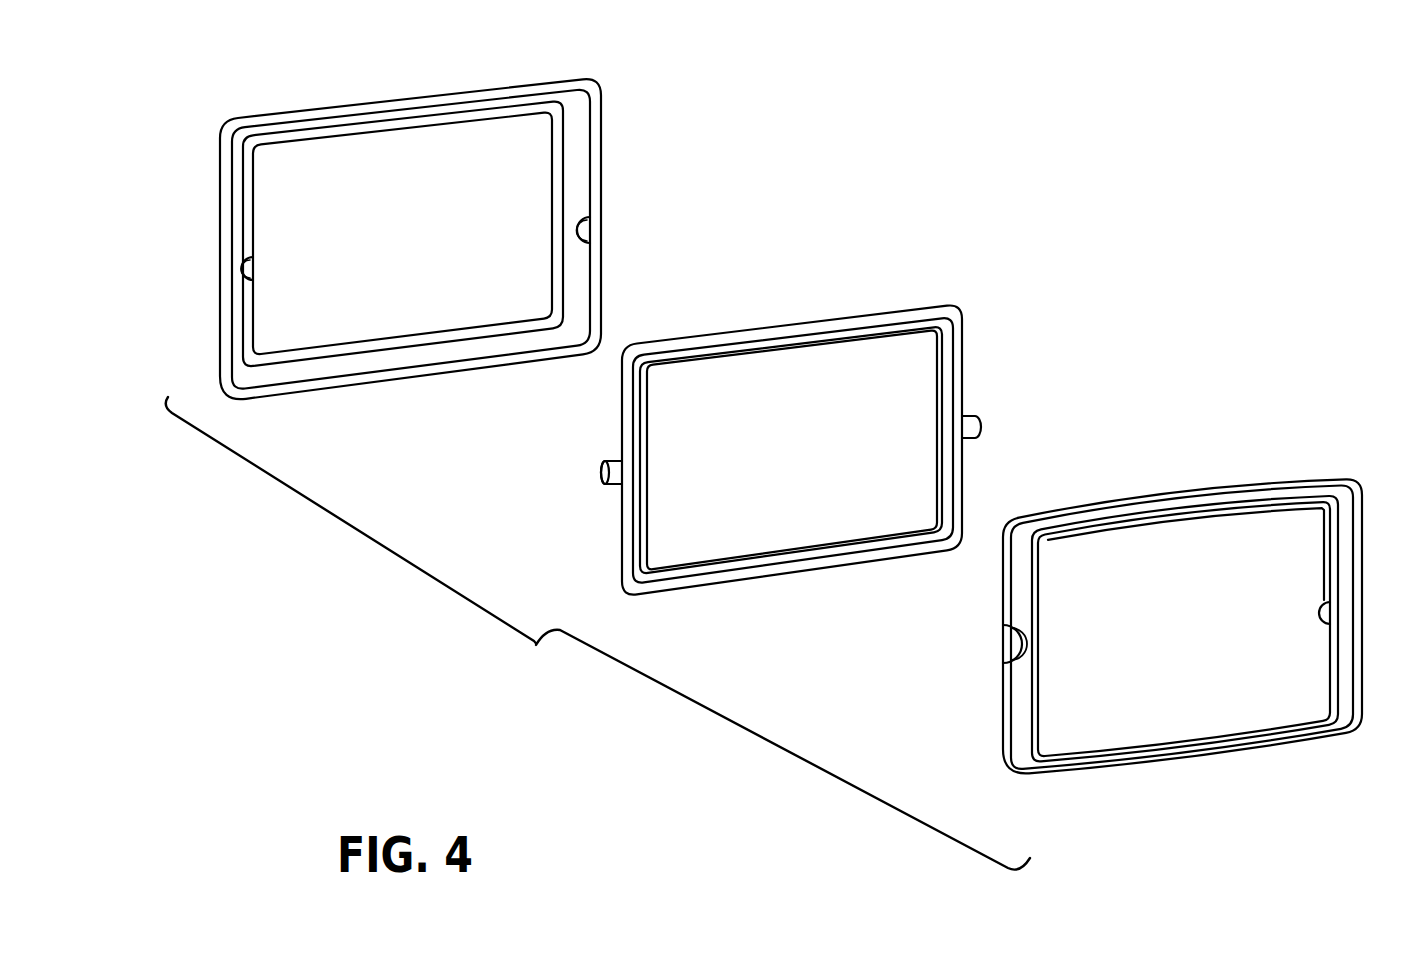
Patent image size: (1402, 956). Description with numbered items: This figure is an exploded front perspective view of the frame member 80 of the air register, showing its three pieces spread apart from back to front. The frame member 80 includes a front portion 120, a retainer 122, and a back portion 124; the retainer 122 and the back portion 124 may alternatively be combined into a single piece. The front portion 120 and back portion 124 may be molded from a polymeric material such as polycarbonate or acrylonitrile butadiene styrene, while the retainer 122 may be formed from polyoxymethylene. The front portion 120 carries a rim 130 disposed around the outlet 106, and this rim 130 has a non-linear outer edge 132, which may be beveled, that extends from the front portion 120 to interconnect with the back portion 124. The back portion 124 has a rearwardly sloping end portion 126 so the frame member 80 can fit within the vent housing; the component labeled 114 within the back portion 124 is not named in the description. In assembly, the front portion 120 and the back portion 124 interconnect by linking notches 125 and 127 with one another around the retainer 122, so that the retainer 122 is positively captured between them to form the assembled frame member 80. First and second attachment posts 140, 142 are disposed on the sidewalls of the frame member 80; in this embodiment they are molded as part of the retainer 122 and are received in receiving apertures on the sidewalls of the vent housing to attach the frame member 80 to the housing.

The frame member 80 is at (598, 633).
The outlet 106 is at (1204, 652).
The opening 114 is at (428, 238).
The front portion 120 is at (1284, 460).
The retainer 122 is at (972, 307).
The back portion 124 is at (609, 113).
The notches 125 is at (236, 266).
The rearwardly sloping end portion 126 is at (428, 100).
The notches 127 is at (1020, 627).
The rim 130 is at (1353, 493).
The non-linear outer edge 132 is at (1183, 510).
The first attachment post 140 is at (600, 471).
The second attachment post 142 is at (985, 423).